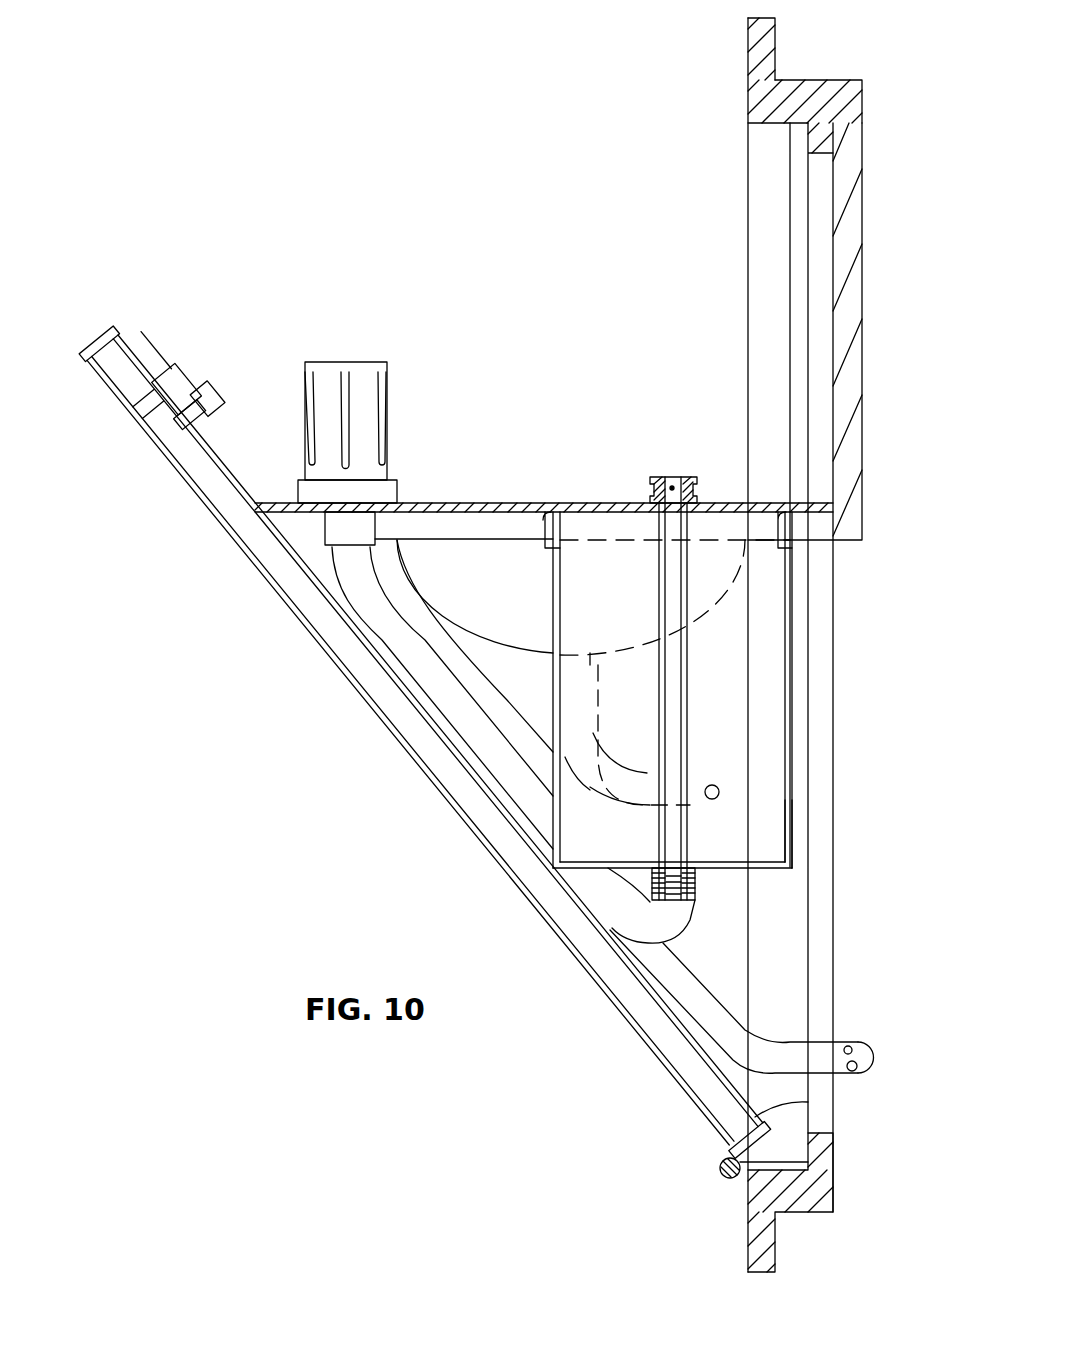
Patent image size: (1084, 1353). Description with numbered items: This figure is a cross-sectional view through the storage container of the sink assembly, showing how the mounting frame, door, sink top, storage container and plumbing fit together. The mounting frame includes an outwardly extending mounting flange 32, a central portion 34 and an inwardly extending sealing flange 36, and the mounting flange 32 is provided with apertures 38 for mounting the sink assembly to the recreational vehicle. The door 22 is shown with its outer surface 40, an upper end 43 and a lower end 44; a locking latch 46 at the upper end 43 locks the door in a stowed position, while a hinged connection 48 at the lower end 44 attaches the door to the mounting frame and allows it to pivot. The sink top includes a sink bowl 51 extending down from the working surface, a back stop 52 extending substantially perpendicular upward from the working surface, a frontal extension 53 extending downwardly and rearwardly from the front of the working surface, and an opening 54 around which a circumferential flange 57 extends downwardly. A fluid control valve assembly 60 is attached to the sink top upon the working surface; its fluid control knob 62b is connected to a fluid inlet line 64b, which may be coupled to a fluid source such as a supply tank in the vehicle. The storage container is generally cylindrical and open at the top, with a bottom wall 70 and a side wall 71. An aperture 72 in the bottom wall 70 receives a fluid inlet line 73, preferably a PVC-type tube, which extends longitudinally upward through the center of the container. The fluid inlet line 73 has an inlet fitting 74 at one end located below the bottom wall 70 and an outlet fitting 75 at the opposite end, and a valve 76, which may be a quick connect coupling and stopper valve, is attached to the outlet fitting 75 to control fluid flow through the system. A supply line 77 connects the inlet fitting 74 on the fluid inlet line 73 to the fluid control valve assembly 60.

The door 22 is at (384, 724).
The mounting flange 32 is at (750, 36).
The central portion 34 is at (818, 88).
The sealing flange 36 is at (808, 143).
The apertures 38 is at (768, 60).
The outer surface 40 is at (308, 632).
The upper end 43 is at (98, 350).
The lower end 44 is at (808, 1102).
The locking latch 46 is at (190, 378).
The hinged connection 48 is at (720, 1175).
The sink bowl 51 is at (498, 640).
The back stop 52 is at (850, 292).
The frontal extension 53 is at (285, 522).
The opening 54 is at (602, 522).
The circumferential flange 57 is at (568, 528).
The fluid control valve assembly 60 is at (397, 483).
The fluid control knob 62b is at (372, 362).
The fluid inlet line 64b is at (840, 1040).
The bottom wall 70 is at (778, 878).
The side wall 71 is at (792, 805).
The aperture 72 is at (690, 844).
The fluid inlet line 73 is at (685, 743).
The inlet fitting 74 is at (692, 900).
The outlet fitting 75 is at (693, 487).
The valve 76 is at (670, 480).
The supply line 77 is at (688, 925).